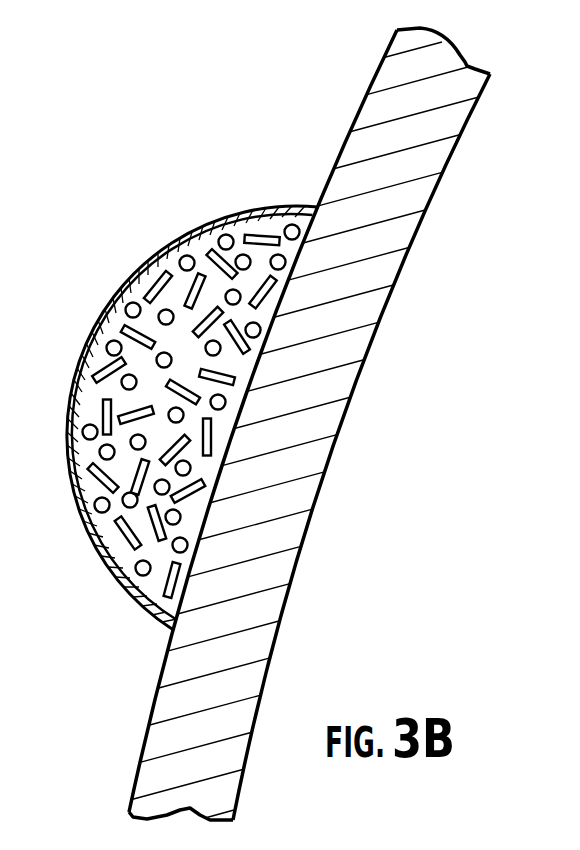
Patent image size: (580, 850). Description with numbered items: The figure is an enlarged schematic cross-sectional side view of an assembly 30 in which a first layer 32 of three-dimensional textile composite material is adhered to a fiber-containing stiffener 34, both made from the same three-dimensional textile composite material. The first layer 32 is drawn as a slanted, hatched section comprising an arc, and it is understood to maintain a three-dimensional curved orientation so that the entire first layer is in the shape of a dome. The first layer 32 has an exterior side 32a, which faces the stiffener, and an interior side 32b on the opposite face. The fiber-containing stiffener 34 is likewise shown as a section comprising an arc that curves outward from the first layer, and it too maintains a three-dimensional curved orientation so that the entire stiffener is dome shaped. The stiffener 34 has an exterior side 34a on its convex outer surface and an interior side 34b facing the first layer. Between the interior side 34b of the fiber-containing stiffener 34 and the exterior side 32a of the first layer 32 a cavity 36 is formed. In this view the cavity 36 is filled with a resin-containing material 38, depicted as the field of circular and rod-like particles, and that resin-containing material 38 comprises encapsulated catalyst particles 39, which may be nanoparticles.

The assembly 30 is at (171, 169).
The first layer 32 is at (447, 59).
The exterior side of first layer 32a is at (360, 110).
The interior side of first layer 32b is at (451, 153).
The fiber-containing stiffener 34 is at (67, 471).
The exterior side of fiber-containing stiffener 34a is at (126, 279).
The interior side of fiber-containing stiffener 34b is at (95, 352).
The cavity 36 is at (177, 288).
The resin-containing material 38 is at (253, 277).
The encapsulated catalyst particles 39 is at (67, 428).